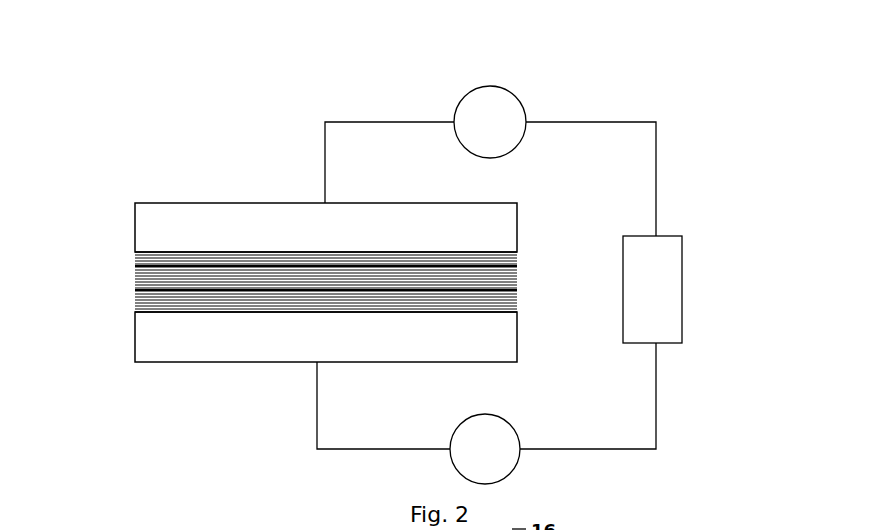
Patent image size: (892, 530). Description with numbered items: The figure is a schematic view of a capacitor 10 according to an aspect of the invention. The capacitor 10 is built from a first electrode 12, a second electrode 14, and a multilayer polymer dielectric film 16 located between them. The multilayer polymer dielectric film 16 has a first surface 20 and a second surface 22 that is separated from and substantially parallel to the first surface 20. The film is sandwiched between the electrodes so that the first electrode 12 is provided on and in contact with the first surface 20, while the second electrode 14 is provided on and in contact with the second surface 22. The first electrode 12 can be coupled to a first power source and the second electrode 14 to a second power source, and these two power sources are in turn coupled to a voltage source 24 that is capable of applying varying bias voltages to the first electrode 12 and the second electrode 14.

The capacitor 10 is at (517, 63).
The first electrode 12 is at (135, 228).
The second electrode 14 is at (135, 338).
The multilayer polymer dielectric film 16 is at (135, 280).
The first surface 20 is at (492, 252).
The second surface 22 is at (500, 312).
The voltage source 24 is at (682, 277).